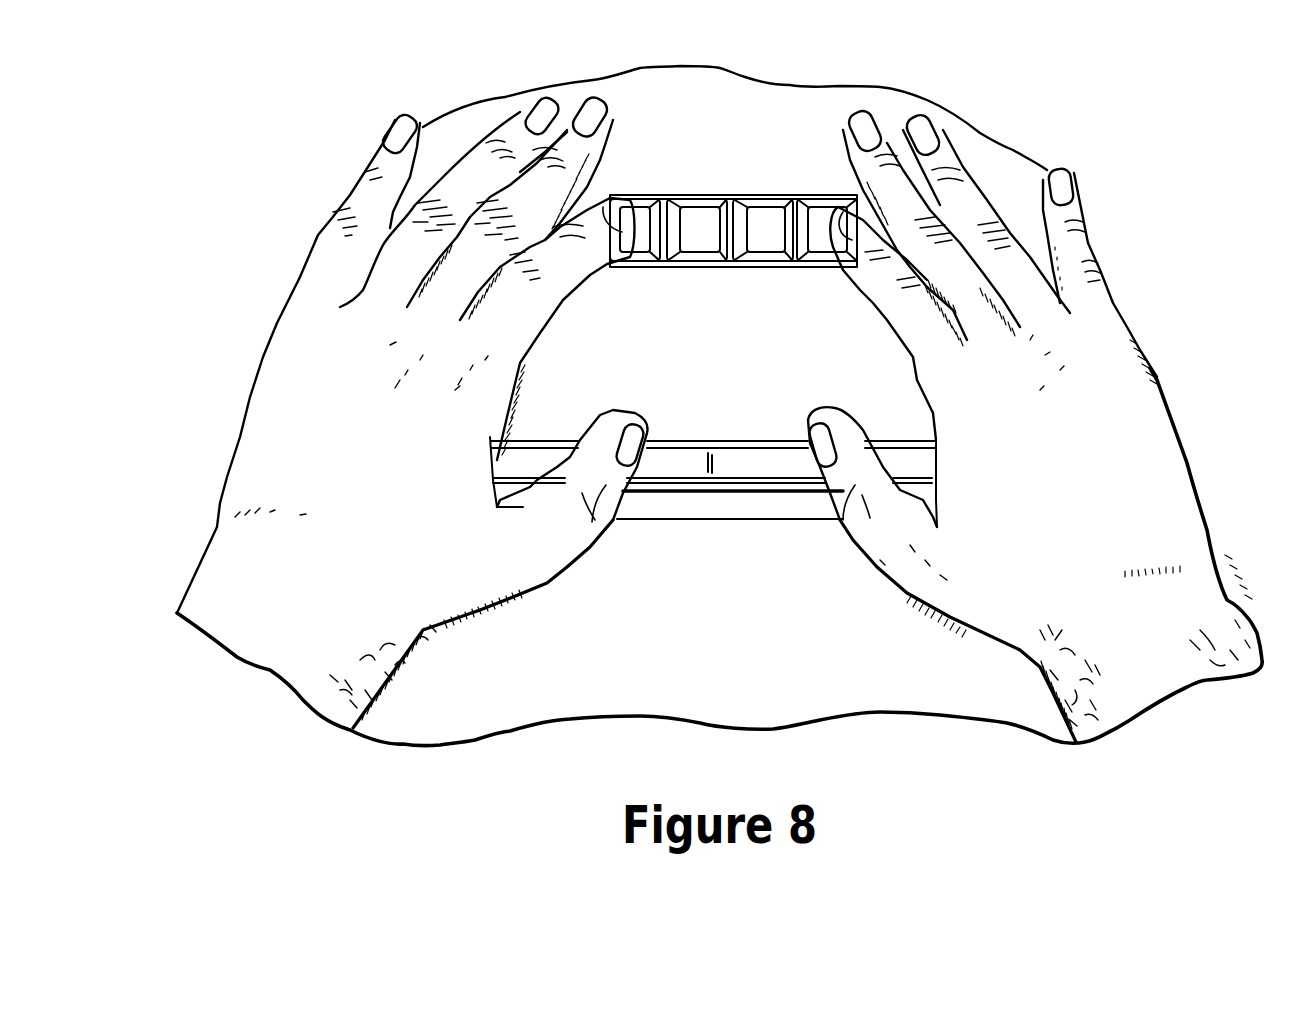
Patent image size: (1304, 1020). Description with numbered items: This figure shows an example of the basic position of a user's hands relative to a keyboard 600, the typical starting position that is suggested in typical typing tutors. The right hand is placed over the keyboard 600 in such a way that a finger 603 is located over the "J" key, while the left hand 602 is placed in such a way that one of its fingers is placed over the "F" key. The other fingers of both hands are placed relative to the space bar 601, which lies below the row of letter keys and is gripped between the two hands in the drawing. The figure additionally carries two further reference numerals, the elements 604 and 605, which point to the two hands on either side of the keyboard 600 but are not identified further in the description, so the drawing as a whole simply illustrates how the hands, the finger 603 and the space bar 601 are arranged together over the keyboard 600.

The keyboard 600 is at (778, 317).
The space bar 601 is at (753, 467).
The left hand 602 is at (640, 195).
The finger 603 is at (812, 195).
The right hand 604 is at (1178, 318).
The left hand 605 is at (251, 308).